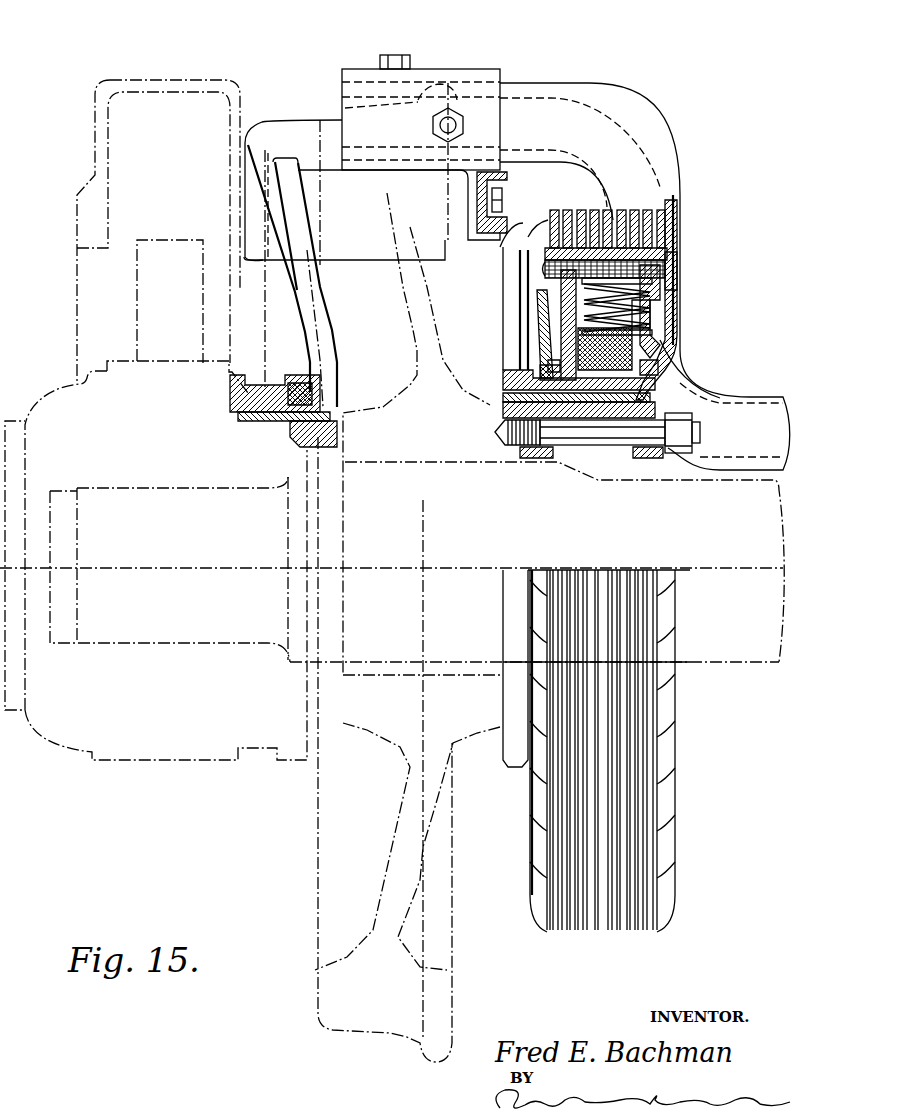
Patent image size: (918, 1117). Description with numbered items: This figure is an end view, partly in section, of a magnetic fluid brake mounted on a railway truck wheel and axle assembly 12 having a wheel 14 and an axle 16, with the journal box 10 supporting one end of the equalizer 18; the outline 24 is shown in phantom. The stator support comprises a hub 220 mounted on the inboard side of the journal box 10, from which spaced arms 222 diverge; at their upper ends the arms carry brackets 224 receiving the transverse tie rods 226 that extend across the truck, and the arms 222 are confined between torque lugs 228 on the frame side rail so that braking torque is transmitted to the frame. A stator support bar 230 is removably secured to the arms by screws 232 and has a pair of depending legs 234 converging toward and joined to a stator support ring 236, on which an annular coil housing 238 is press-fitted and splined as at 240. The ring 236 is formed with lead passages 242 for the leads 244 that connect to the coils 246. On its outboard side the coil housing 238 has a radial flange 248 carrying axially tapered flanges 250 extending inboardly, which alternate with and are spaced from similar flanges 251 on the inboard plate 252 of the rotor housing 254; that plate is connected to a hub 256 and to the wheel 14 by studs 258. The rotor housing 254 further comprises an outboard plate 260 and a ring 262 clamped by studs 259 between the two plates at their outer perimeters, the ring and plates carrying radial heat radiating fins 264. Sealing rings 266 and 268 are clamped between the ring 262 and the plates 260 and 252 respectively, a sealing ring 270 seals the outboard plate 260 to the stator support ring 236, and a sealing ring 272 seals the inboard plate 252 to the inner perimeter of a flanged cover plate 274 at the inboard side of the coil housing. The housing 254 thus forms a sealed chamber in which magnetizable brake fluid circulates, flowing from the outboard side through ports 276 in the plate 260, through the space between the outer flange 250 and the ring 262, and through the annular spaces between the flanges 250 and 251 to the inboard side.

The journal box 10 is at (90, 731).
The wheel and axle assembly 12 is at (749, 662).
The wheel 14 is at (414, 339).
The axle 16 is at (715, 647).
The equalizer 18 is at (150, 257).
The casing 24 is at (113, 76).
The hub 220 is at (290, 430).
The arms 222 is at (300, 293).
The brackets 224 is at (480, 68).
The transverse tie rods 226 is at (630, 112).
The torque lugs 228 is at (250, 147).
The stator support bar 230 is at (490, 195).
The screws 232 is at (488, 203).
The depending legs 234 is at (520, 255).
The stator support ring 236 is at (520, 382).
The annular coil housing 238 is at (645, 362).
The spline 240 is at (603, 416).
The lead passages 242 is at (505, 417).
The leads 244 is at (490, 390).
The coils 246 is at (575, 420).
The radial flange 248 is at (545, 338).
The axially tapered flanges 250 is at (673, 313).
The flanges 251 is at (560, 281).
The inboard plate 252 is at (680, 375).
The rotor housing 254 is at (680, 213).
The hub 256 is at (642, 458).
The studs 258 is at (692, 440).
The studs 259 is at (667, 253).
The outboard plate 260 is at (640, 300).
The ring 262 is at (637, 212).
The heat radiating fins 264 is at (552, 210).
The sealing ring 266 is at (648, 290).
The sealing ring 268 is at (667, 273).
The sealing ring 270 is at (540, 370).
The sealing ring 272 is at (680, 393).
The flanged cover plate 274 is at (668, 336).
The ports 276 is at (656, 313).